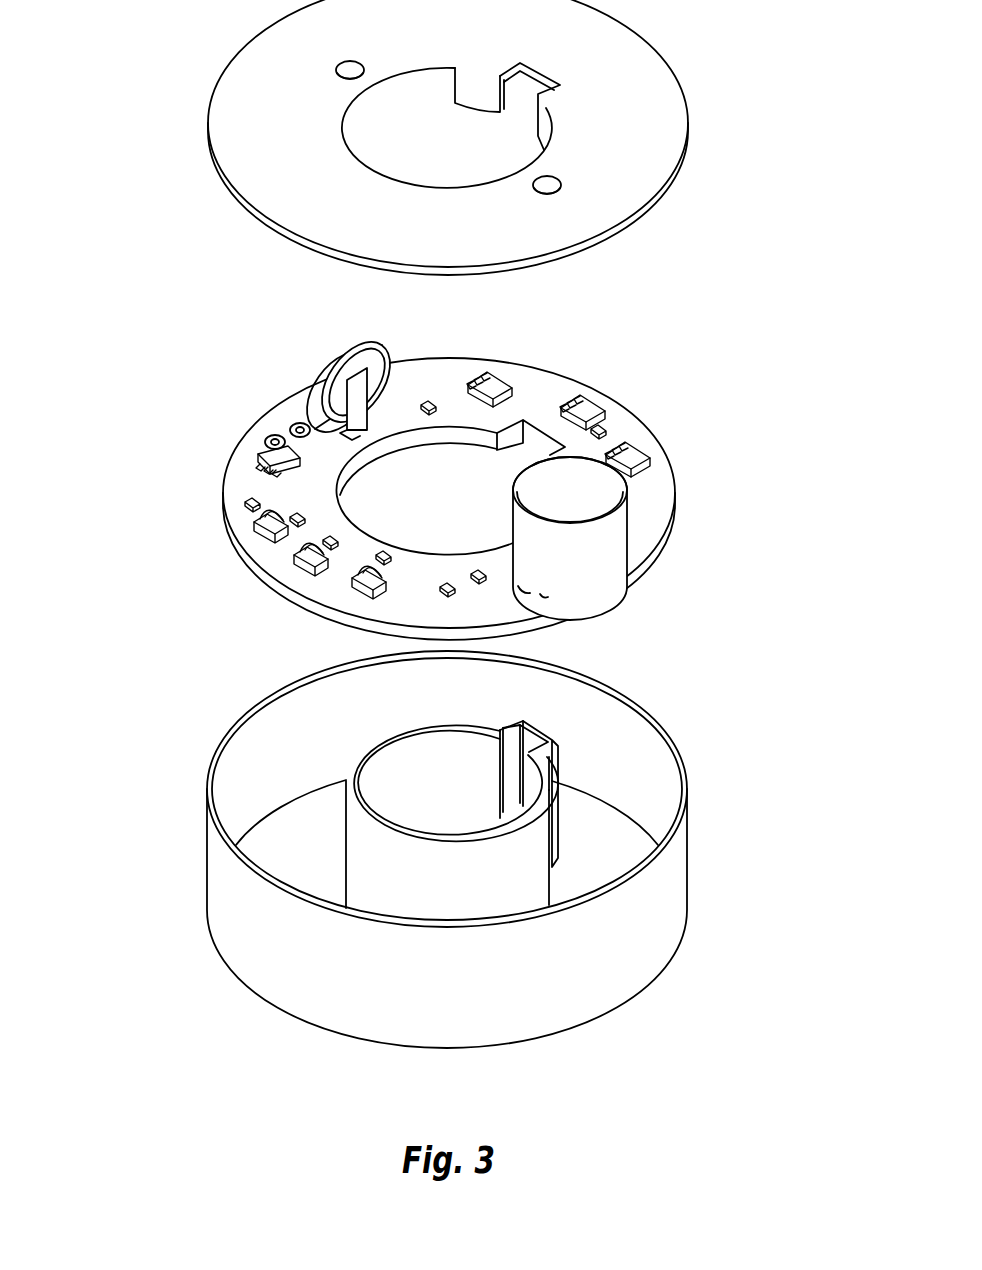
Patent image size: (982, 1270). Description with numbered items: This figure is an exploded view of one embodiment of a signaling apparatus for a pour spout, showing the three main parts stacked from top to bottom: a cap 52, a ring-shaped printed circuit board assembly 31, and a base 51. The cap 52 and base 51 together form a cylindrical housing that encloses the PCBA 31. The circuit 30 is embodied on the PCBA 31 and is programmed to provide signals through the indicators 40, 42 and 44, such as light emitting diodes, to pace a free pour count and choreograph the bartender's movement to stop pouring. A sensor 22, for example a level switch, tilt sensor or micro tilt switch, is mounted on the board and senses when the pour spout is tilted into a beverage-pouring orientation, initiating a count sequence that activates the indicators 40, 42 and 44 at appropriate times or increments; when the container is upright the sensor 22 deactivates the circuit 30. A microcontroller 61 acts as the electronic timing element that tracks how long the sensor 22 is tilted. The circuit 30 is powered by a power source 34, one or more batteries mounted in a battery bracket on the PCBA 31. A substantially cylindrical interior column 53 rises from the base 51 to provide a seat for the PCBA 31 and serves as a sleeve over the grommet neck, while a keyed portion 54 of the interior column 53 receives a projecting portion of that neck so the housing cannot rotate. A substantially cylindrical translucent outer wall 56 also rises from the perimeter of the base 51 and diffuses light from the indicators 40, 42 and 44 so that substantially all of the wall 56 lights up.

The cap 52 is at (690, 123).
The circuit 30 is at (485, 495).
The printed circuit board assembly 31 is at (672, 490).
The power source 34 is at (352, 342).
The microcontroller 61 is at (268, 443).
The sensor 22 is at (605, 520).
The indicator 42 is at (283, 516).
The indicator 40 is at (305, 560).
The indicator 44 is at (372, 592).
The base 51 is at (453, 840).
The interior column 53 is at (454, 770).
The keyed portion 54 is at (521, 720).
The outer wall 56 is at (242, 910).